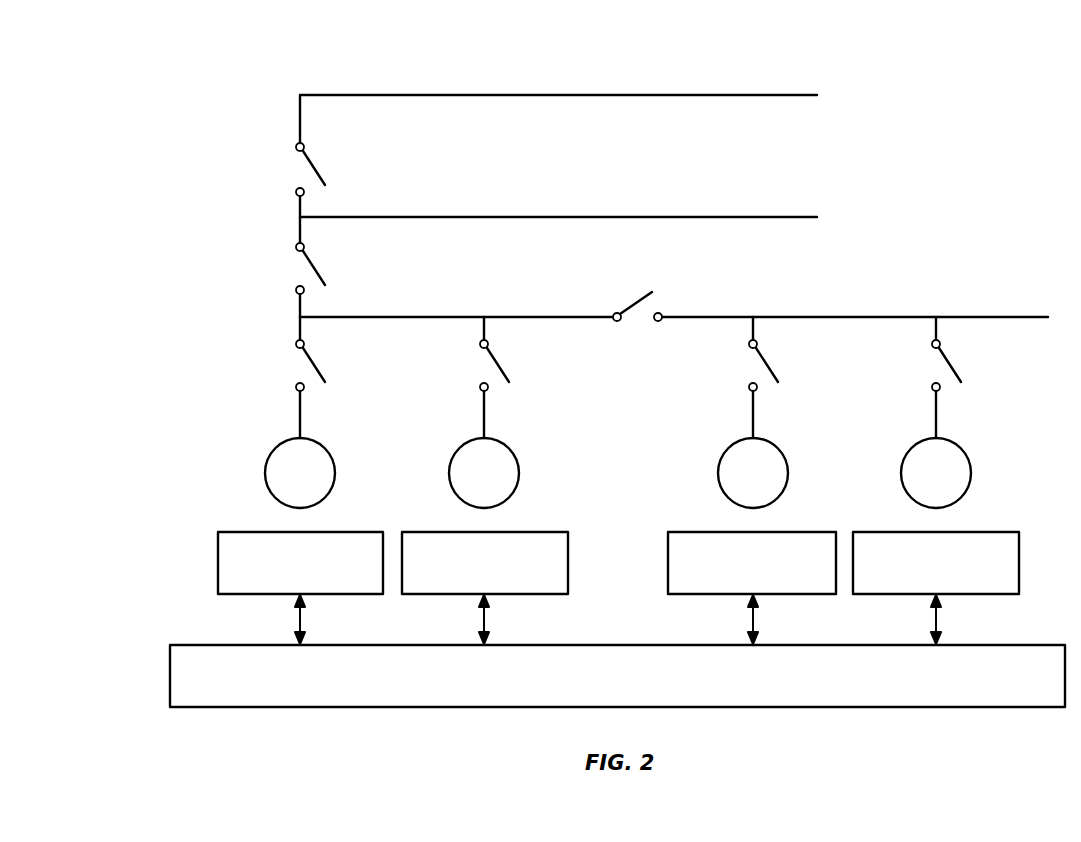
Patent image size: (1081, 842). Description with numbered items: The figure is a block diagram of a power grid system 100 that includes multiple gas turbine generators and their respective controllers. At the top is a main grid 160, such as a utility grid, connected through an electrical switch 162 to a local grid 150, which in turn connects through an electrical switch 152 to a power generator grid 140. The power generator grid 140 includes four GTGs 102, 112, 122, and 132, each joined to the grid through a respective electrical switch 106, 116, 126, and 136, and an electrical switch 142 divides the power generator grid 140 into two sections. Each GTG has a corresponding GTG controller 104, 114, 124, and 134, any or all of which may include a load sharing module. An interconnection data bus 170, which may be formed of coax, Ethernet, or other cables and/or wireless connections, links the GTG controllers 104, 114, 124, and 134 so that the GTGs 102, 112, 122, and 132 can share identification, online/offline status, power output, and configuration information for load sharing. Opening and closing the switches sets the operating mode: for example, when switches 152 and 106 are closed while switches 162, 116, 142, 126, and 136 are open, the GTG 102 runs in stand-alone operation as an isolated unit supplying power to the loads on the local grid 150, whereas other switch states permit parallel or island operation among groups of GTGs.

The power grid system 100 is at (950, 54).
The gas turbine generator 102 is at (335, 471).
The GTG controller 104 is at (218, 560).
The electrical switch 106 is at (317, 364).
The gas turbine generator 112 is at (519, 471).
The GTG controller 114 is at (568, 558).
The electrical switch 116 is at (501, 364).
The gas turbine generator 122 is at (788, 471).
The GTG controller 124 is at (668, 570).
The electrical switch 126 is at (770, 364).
The gas turbine generator 132 is at (971, 471).
The GTG controller 134 is at (1019, 558).
The electrical switch 136 is at (953, 364).
The power generator grid 140 is at (1000, 317).
The electrical switch 142 is at (637, 303).
The local grid 150 is at (770, 217).
The electrical switch 152 is at (317, 264).
The main grid 160 is at (770, 95).
The electrical switch 162 is at (317, 165).
The interconnection data bus 170 is at (618, 645).